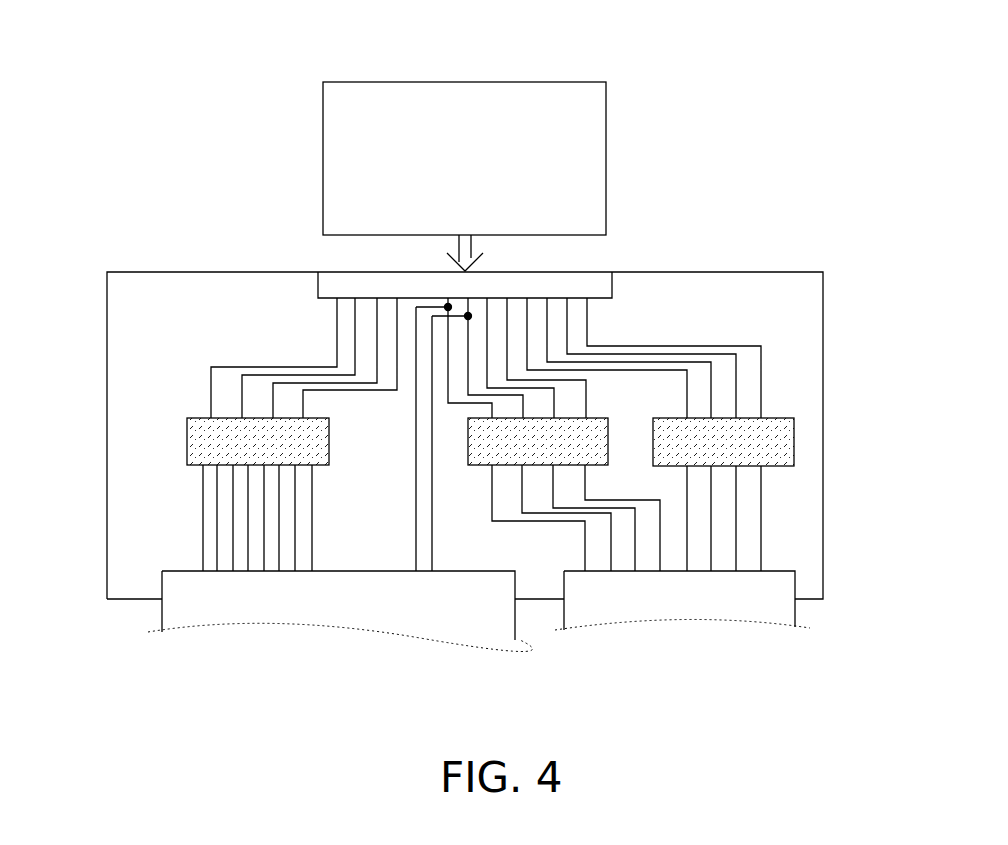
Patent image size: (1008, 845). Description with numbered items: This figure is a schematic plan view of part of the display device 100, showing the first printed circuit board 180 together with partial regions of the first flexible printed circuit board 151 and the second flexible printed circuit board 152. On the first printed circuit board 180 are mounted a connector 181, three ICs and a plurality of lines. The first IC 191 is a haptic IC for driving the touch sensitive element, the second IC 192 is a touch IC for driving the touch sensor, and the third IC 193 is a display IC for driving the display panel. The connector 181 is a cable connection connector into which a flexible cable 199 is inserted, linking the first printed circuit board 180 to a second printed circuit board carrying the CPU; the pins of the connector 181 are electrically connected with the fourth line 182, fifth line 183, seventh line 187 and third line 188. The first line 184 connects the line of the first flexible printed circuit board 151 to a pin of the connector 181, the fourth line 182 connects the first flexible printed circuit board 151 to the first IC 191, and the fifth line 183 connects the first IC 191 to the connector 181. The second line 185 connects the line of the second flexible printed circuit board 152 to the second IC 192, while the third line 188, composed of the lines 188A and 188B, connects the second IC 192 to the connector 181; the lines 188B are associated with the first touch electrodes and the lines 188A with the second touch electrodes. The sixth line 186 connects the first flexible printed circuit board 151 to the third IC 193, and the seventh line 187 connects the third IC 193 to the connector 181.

The display device 100 is at (806, 30).
The flexible cable 199 is at (587, 127).
The first printed circuit board 180 is at (800, 272).
The connector 181 is at (337, 285).
The first flexible printed circuit board 151 is at (373, 622).
The second flexible printed circuit board 152 is at (695, 608).
The fourth line 182 is at (217, 508).
The fifth line 183 is at (242, 408).
The first line 184 is at (432, 560).
The second line 185 is at (660, 548).
The sixth line 186 is at (736, 543).
The seventh line 187 is at (747, 346).
The third line 188 is at (579, 296).
The lines 188A is at (468, 345).
The lines 188B is at (508, 368).
The first IC 191 is at (187, 440).
The second IC 192 is at (478, 466).
The third IC 193 is at (794, 440).